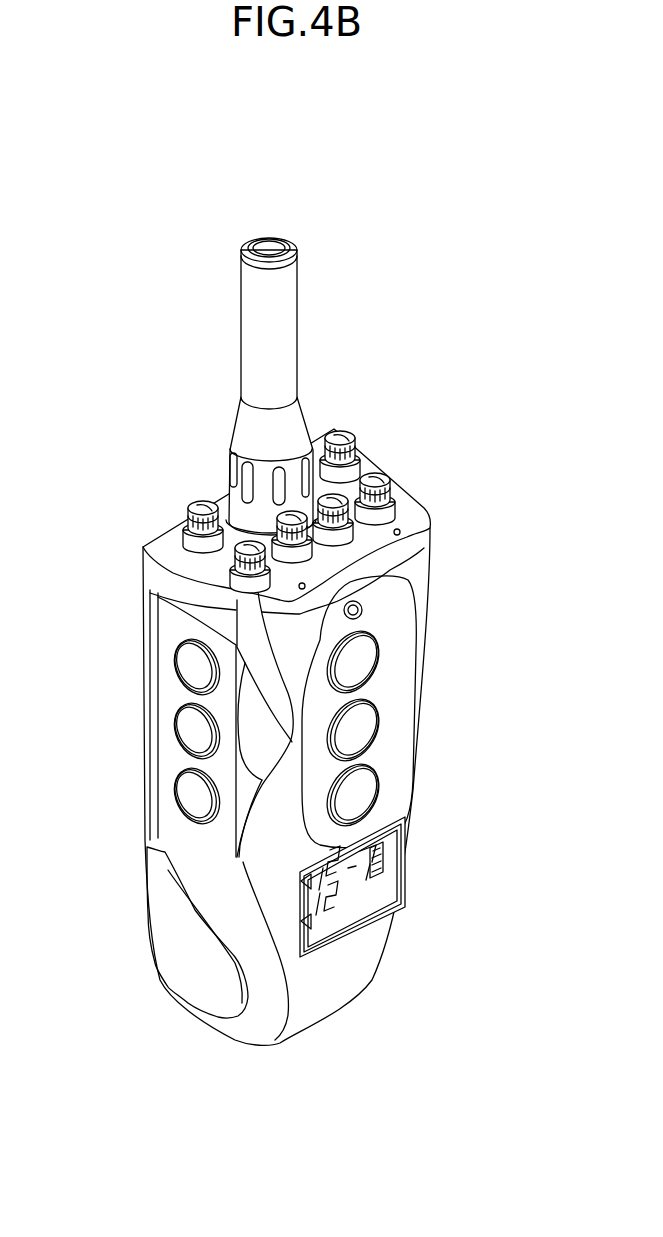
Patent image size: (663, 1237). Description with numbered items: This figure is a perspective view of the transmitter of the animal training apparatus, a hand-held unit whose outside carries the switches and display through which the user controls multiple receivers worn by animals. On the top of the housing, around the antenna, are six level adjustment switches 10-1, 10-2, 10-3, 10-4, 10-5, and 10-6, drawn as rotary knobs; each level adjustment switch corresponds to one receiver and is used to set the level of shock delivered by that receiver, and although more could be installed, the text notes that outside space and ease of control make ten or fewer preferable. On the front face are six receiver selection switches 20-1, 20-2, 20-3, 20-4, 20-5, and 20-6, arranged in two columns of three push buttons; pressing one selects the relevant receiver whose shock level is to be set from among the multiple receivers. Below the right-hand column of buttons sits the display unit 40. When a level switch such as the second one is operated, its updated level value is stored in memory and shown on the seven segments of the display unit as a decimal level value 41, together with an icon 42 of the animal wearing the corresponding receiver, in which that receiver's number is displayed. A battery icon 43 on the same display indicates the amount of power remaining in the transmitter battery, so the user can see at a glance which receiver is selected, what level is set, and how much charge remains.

The level adjustment switch 10-1 is at (193, 499).
The level adjustment switch 10-2 is at (187, 542).
The level adjustment switch 10-3 is at (285, 505).
The level adjustment switch 10-4 is at (432, 512).
The level adjustment switch 10-5 is at (385, 470).
The level adjustment switch 10-6 is at (343, 428).
The receiver selection switch 20-1 is at (190, 667).
The receiver selection switch 20-2 is at (190, 735).
The receiver selection switch 20-3 is at (190, 805).
The receiver selection switch 20-4 is at (363, 657).
The receiver selection switch 20-5 is at (363, 727).
The receiver selection switch 20-6 is at (363, 790).
The display unit 40 is at (385, 835).
The decimal level value 41 is at (362, 897).
The indicator icon 42 is at (308, 920).
The battery icon 43 is at (380, 876).